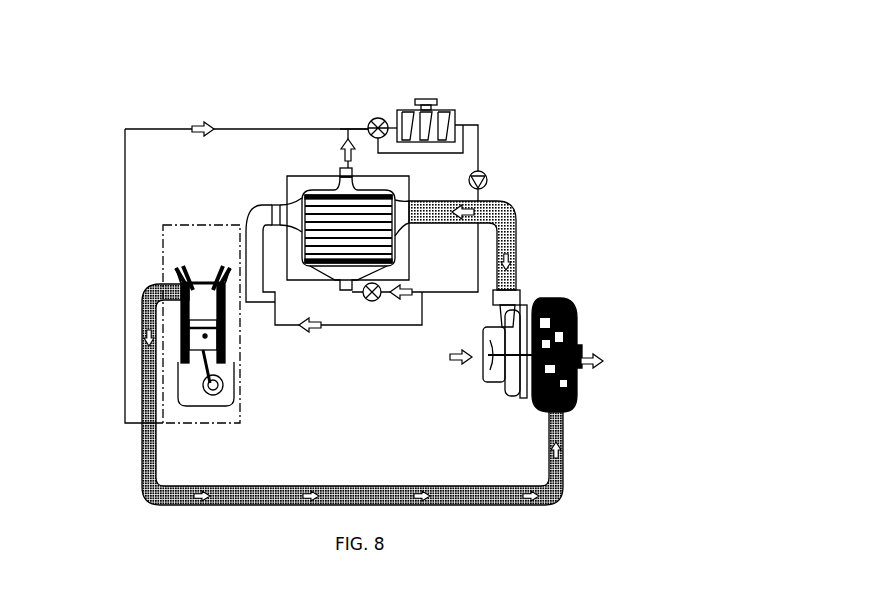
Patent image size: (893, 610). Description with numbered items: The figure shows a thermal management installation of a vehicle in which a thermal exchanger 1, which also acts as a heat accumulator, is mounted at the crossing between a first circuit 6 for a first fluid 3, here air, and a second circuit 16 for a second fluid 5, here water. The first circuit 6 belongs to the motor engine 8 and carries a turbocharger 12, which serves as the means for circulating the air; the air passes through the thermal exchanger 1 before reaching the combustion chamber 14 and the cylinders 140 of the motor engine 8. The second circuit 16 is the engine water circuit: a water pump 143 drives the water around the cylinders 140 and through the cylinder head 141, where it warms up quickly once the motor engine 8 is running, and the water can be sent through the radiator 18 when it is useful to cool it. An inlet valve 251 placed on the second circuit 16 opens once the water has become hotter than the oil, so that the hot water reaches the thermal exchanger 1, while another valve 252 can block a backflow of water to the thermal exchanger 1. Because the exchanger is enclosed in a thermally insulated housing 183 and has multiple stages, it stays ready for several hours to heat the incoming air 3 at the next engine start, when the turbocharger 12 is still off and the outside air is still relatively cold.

The thermal exchanger 1 is at (319, 284).
The first fluid 3 is at (484, 506).
The second fluid 5 is at (357, 126).
The first circuit 6 is at (257, 203).
The motor engine 8 is at (569, 292).
The turbocharger 12 is at (531, 389).
The combustion chamber 14 is at (215, 282).
The second circuit 16 is at (122, 224).
The radiator 18 is at (451, 117).
The cylinders 140 is at (182, 285).
The cylinder head 141 is at (197, 410).
The water pump 143 is at (488, 178).
The housing 183 is at (291, 176).
The inlet valve 251 is at (371, 302).
The valve 252 is at (379, 118).